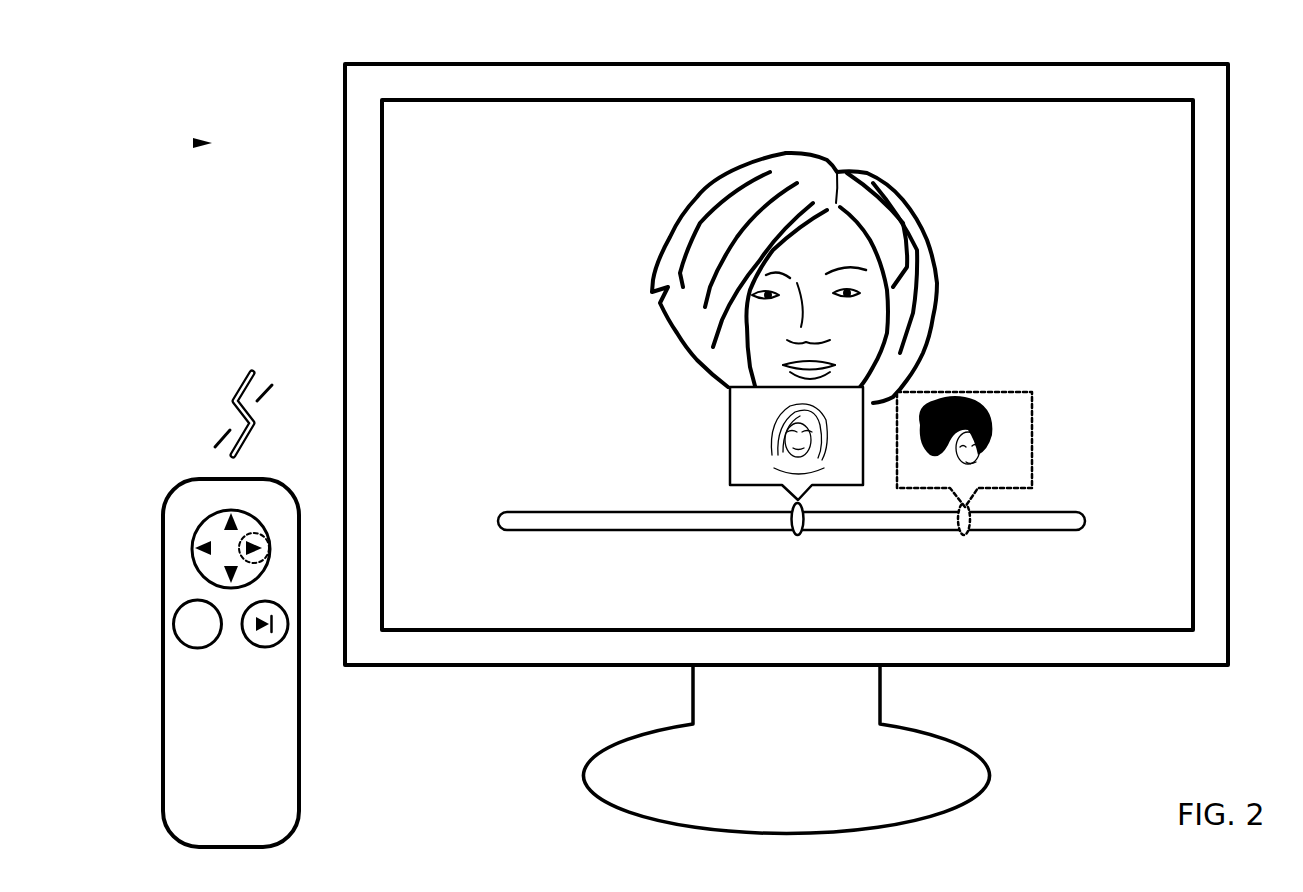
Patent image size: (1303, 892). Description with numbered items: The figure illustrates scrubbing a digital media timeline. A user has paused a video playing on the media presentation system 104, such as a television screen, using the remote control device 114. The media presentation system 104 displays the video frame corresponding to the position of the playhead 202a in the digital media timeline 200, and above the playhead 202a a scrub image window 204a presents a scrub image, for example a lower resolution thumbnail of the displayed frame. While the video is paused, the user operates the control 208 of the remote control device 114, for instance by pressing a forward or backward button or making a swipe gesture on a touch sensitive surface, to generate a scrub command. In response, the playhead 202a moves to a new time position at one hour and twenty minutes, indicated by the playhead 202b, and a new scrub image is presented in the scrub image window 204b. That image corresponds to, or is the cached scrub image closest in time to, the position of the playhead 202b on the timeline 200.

The media presentation system 104 is at (341, 93).
The remote control device 114 is at (298, 730).
The control 208 is at (202, 517).
The digital media timeline 200 is at (667, 512).
The playhead 202a is at (797, 535).
The playhead 202b is at (964, 535).
The scrub image window 204a is at (760, 446).
The scrub image window 204b is at (1007, 403).